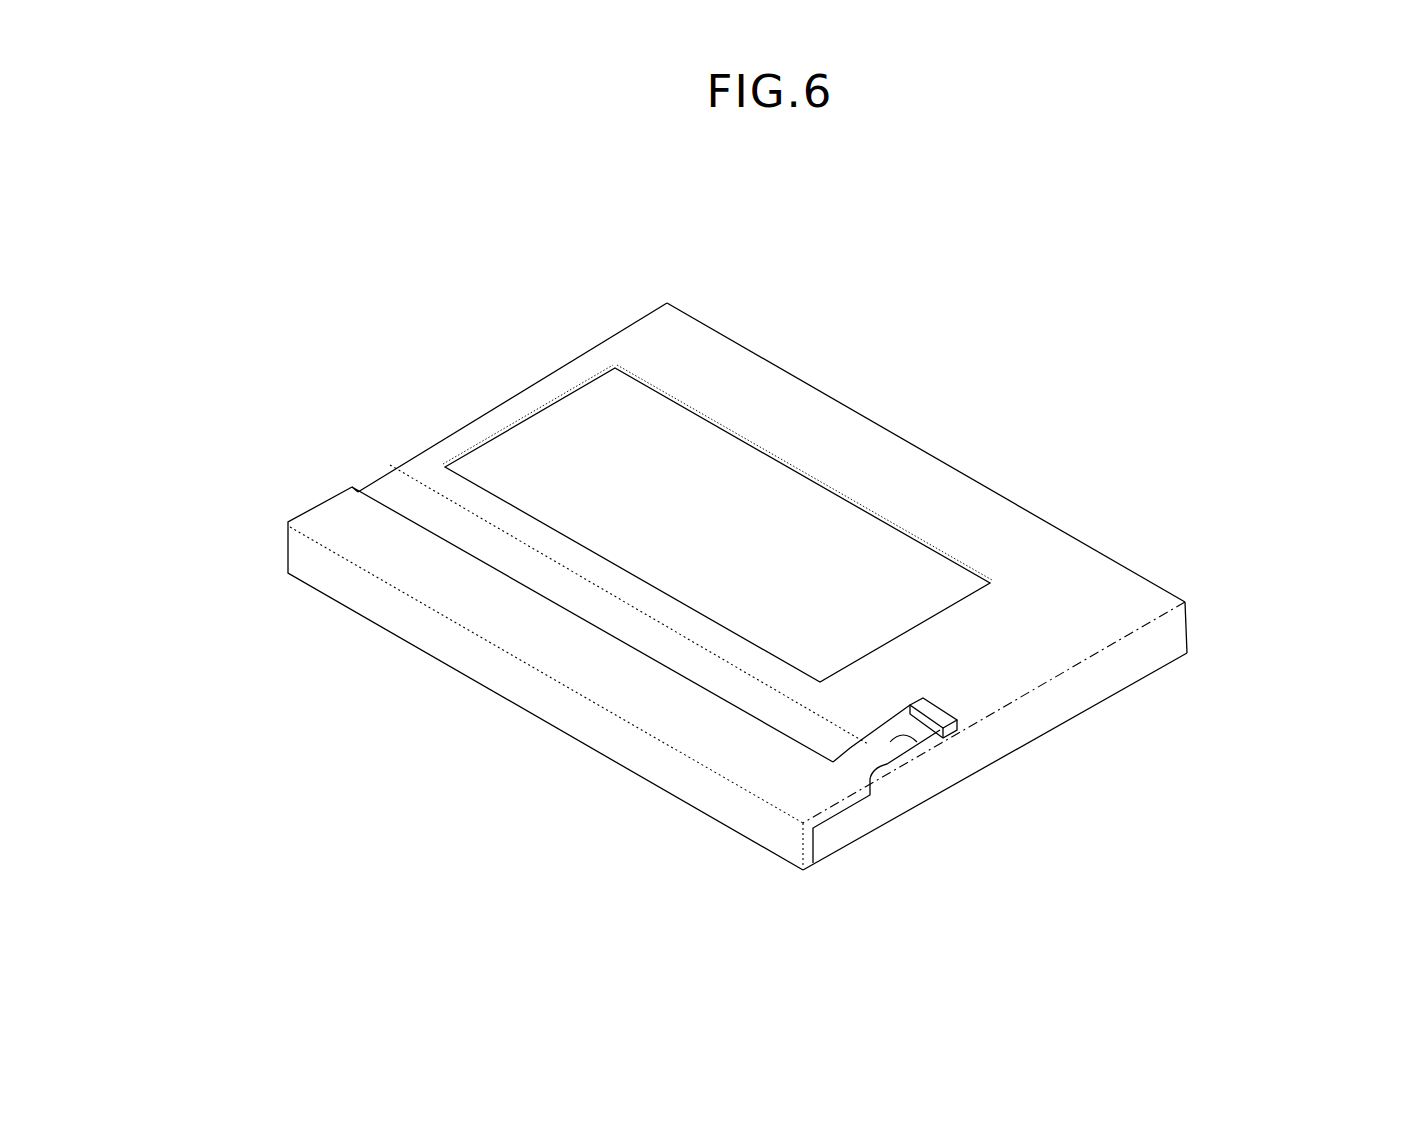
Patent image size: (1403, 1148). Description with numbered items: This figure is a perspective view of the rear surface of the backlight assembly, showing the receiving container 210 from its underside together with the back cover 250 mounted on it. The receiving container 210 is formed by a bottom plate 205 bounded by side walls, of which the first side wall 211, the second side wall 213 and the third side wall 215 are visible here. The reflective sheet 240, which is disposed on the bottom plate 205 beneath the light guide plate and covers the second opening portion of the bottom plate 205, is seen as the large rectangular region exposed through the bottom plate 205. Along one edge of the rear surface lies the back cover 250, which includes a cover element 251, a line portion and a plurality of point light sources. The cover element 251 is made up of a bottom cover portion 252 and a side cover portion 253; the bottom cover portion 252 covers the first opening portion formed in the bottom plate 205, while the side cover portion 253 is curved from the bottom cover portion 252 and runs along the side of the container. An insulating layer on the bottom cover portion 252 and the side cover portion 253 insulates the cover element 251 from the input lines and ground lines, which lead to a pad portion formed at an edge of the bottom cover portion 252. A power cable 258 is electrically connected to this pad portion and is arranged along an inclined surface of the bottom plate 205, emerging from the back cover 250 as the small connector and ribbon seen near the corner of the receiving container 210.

The bottom plate 205 is at (737, 563).
The receiving container 210 is at (805, 581).
The first side wall 211 is at (1060, 700).
The second side wall 213 is at (483, 408).
The third side wall 215 is at (997, 492).
The reflective sheet 240 is at (700, 447).
The back cover 250 is at (664, 700).
The cover element 251 is at (579, 700).
The bottom cover portion 252 is at (780, 784).
The side cover portion 253 is at (612, 742).
The power cable 258 is at (923, 747).